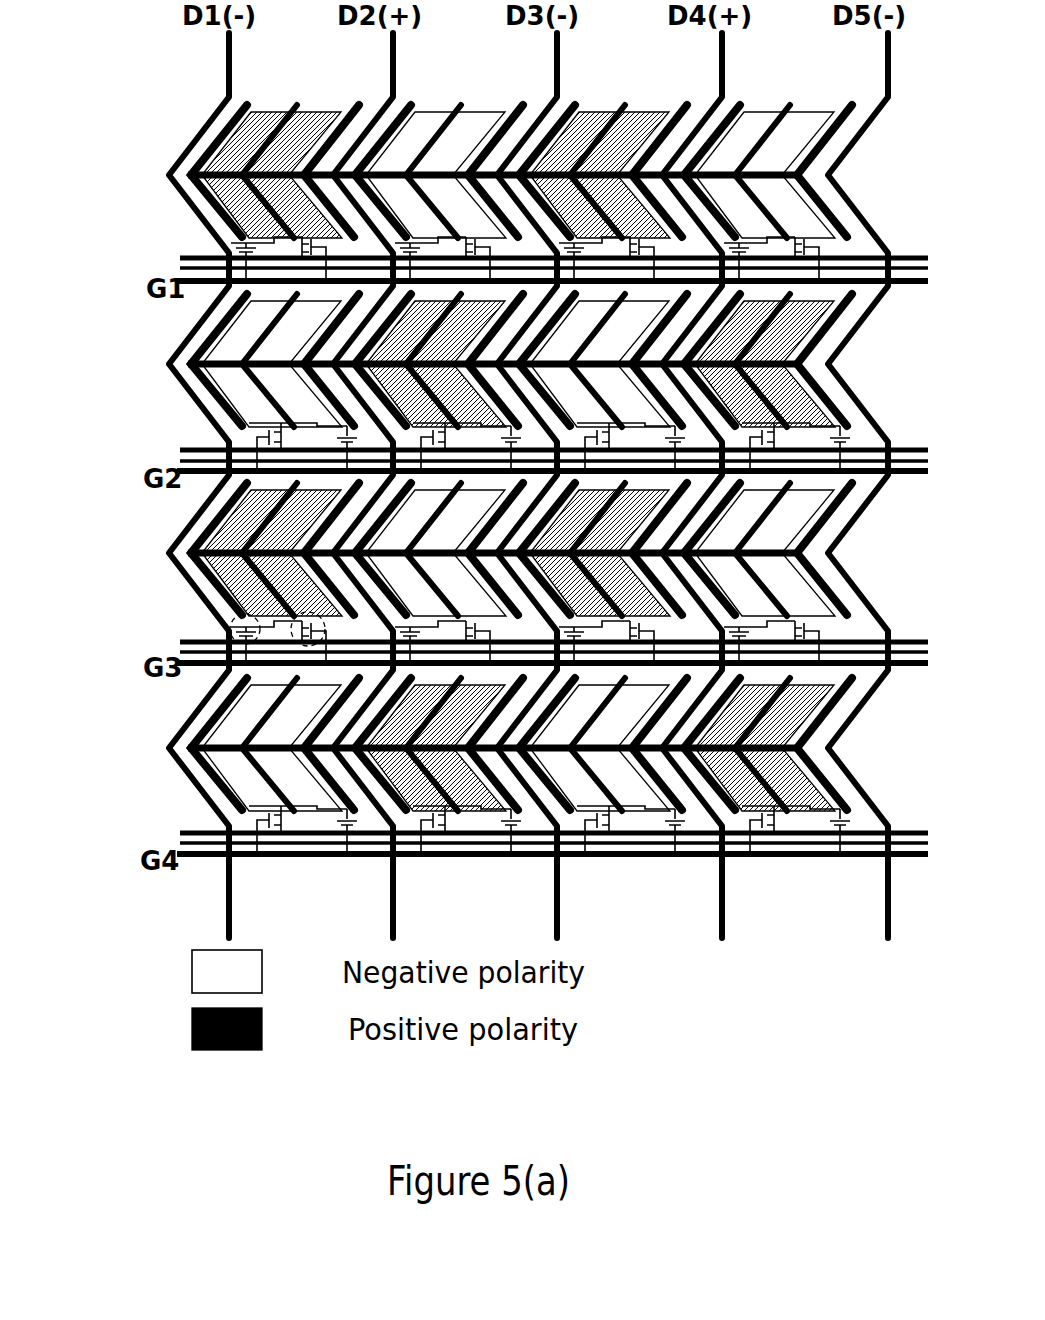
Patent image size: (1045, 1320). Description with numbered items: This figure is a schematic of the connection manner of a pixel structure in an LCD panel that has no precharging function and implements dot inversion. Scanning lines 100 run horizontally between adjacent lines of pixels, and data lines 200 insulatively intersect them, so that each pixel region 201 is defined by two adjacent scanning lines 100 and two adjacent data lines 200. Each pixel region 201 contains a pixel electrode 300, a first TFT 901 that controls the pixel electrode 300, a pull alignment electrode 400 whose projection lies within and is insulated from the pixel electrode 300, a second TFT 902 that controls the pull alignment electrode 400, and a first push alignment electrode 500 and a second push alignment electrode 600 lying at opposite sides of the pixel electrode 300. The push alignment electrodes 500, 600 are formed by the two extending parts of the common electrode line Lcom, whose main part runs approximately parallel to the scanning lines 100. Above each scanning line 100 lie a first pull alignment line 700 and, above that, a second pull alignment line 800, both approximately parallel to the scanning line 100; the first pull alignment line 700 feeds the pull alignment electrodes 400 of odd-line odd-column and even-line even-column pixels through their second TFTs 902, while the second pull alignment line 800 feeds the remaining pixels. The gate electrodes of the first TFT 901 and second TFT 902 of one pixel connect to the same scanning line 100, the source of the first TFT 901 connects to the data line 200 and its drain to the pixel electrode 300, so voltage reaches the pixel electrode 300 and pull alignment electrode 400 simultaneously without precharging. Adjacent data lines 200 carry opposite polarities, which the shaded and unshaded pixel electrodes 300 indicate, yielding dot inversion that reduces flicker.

The scanning line 100 is at (178, 281).
The data line 200 is at (228, 66).
The pixel region 201 is at (298, 296).
The pixel electrode 300 is at (215, 152).
The pull alignment electrode 400 is at (255, 525).
The first push alignment electrode 500 is at (248, 604).
The second push alignment electrode 600 is at (262, 535).
The first pull alignment line 700 is at (180, 268).
The second pull alignment line 800 is at (180, 258).
The first TFT 901 is at (230, 628).
The second TFT 902 is at (293, 643).
The common electrode line Lcom is at (185, 366).